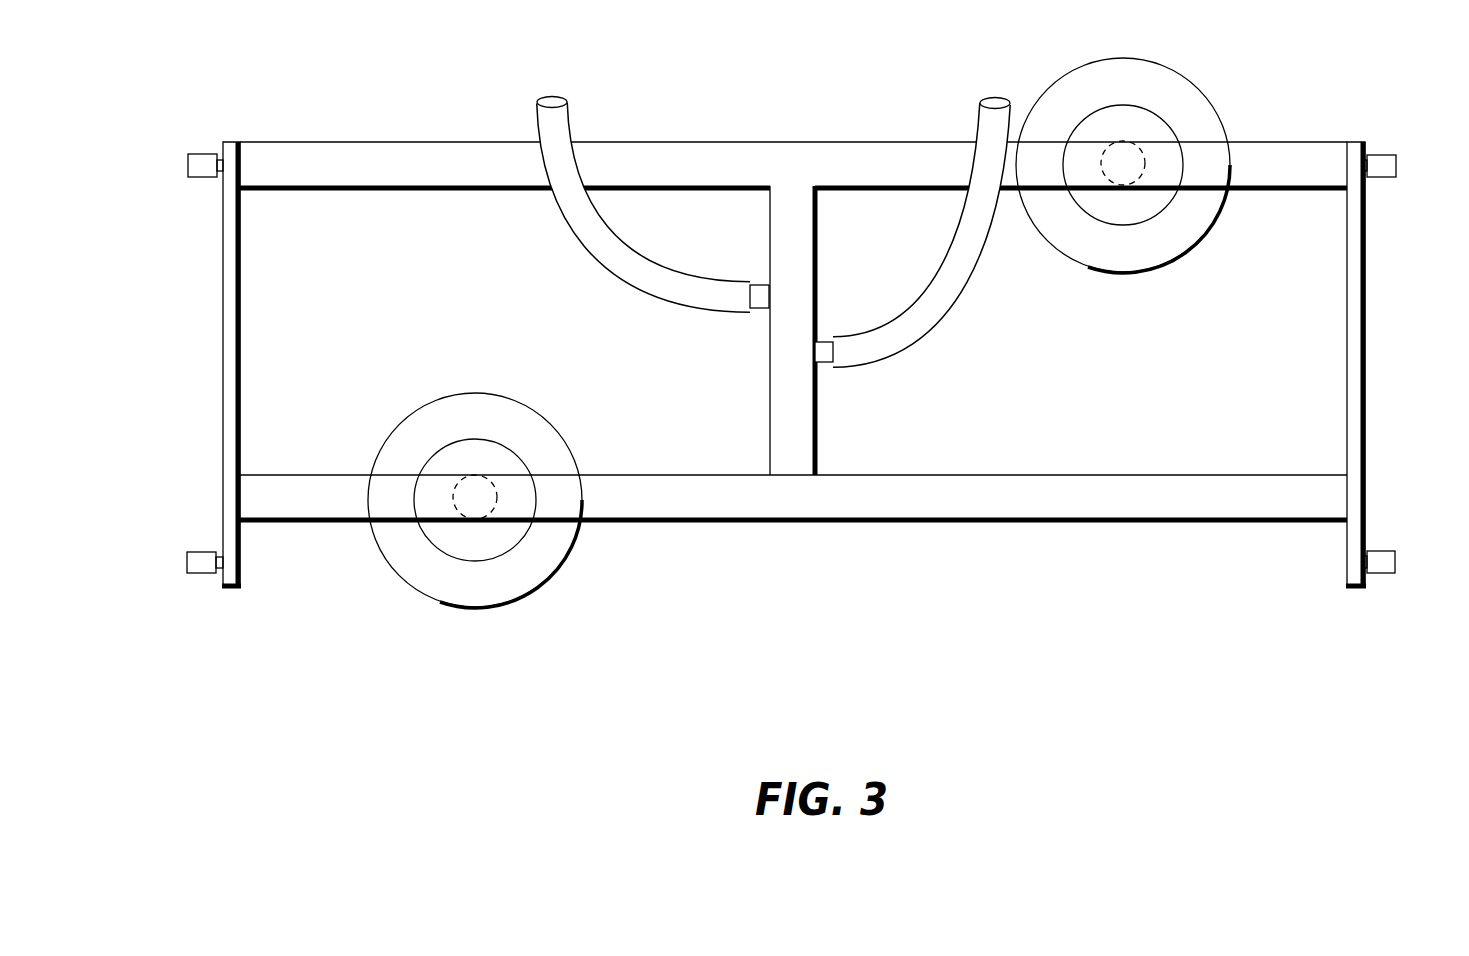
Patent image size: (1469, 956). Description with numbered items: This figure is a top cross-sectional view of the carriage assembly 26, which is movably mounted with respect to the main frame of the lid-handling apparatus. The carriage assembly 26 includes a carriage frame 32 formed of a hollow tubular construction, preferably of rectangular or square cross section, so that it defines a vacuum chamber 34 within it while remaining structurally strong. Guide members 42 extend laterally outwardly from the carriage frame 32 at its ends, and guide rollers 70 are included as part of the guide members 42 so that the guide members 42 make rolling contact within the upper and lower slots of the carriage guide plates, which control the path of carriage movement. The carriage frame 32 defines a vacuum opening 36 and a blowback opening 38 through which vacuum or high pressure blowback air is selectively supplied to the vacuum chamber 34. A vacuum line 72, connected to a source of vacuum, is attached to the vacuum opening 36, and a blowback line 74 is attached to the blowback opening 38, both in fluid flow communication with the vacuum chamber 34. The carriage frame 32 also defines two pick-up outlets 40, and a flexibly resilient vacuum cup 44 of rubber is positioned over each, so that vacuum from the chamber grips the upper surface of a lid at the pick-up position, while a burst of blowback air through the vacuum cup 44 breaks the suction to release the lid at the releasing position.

The carriage assembly 26 is at (320, 522).
The carriage frame 32 is at (1290, 148).
The vacuum chamber 34 is at (806, 178).
The vacuum opening 36 is at (825, 363).
The blowback opening 38 is at (757, 308).
The pick-up outlet 40 is at (475, 478).
The guide member 42 is at (208, 178).
The vacuum cup 44 is at (517, 588).
The guide roller 70 is at (193, 153).
The vacuum line 72 is at (975, 262).
The blowback line 74 is at (565, 127).